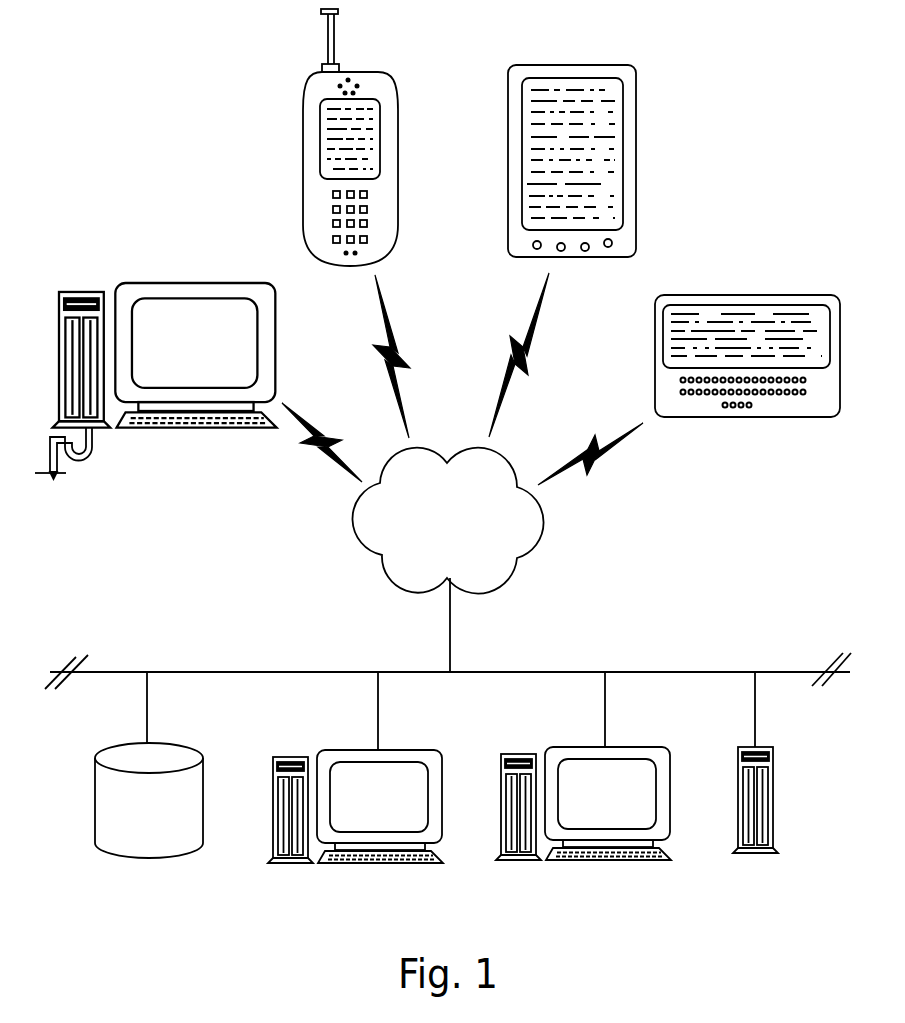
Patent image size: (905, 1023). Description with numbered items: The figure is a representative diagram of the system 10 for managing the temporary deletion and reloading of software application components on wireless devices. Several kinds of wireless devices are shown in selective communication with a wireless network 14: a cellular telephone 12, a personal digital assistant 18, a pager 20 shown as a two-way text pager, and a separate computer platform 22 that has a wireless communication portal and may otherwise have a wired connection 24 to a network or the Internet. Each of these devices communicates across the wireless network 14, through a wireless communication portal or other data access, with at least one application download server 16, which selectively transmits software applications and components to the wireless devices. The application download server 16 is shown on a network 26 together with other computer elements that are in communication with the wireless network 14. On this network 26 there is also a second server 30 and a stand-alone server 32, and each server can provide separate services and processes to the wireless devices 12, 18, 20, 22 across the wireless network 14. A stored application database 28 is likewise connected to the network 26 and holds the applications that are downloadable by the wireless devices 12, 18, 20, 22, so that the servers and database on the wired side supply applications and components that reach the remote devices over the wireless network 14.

The system 10 is at (748, 140).
The cellular telephone 12 is at (380, 72).
The wireless network 14 is at (543, 519).
The application download server 16 is at (356, 750).
The personal digital assistant 18 is at (575, 65).
The pager 20 is at (778, 418).
The computer platform 22 is at (188, 283).
The wired connection 24 is at (96, 462).
The network 26 is at (650, 670).
The stored application database 28 is at (95, 800).
The second server 30 is at (592, 747).
The stand-alone server 32 is at (773, 778).